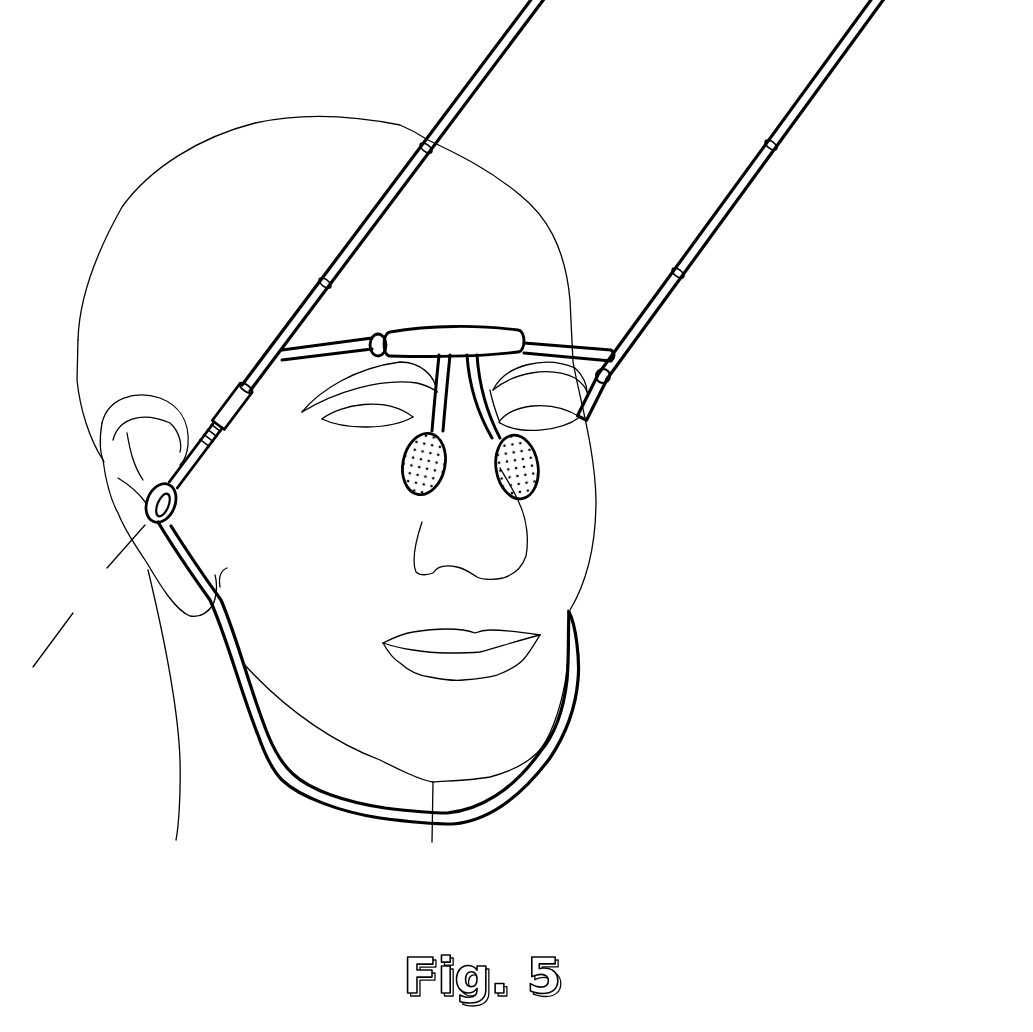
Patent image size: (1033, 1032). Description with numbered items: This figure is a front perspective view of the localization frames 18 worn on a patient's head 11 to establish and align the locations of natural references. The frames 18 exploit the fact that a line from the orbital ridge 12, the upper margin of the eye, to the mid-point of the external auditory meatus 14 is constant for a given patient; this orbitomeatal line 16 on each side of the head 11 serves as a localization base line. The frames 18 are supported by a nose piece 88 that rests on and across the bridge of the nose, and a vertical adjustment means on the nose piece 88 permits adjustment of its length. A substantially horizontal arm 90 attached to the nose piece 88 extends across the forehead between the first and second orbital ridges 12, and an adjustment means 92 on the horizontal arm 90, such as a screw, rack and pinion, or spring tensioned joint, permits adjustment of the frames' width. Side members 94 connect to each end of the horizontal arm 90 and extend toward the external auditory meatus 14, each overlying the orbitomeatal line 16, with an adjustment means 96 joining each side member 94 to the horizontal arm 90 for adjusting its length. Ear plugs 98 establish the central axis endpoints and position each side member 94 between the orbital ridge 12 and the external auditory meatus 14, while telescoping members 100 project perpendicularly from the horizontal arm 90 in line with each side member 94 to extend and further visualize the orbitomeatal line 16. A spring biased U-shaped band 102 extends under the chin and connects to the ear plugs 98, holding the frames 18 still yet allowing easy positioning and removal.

The head 11 is at (165, 133).
The orbital ridge 12 is at (262, 383).
The external auditory meatus 14 is at (150, 498).
The orbitomeatal line 16 is at (94, 587).
The localization frames 18 is at (200, 357).
The nose piece 88 is at (410, 472).
The horizontal arm 90 is at (552, 328).
The adjustment means 92 is at (452, 323).
The side member 94 is at (193, 457).
The adjustment means 96 is at (214, 394).
The ear plugs 98 is at (186, 508).
The telescoping members 100 is at (367, 220).
The U-shaped band 102 is at (478, 822).